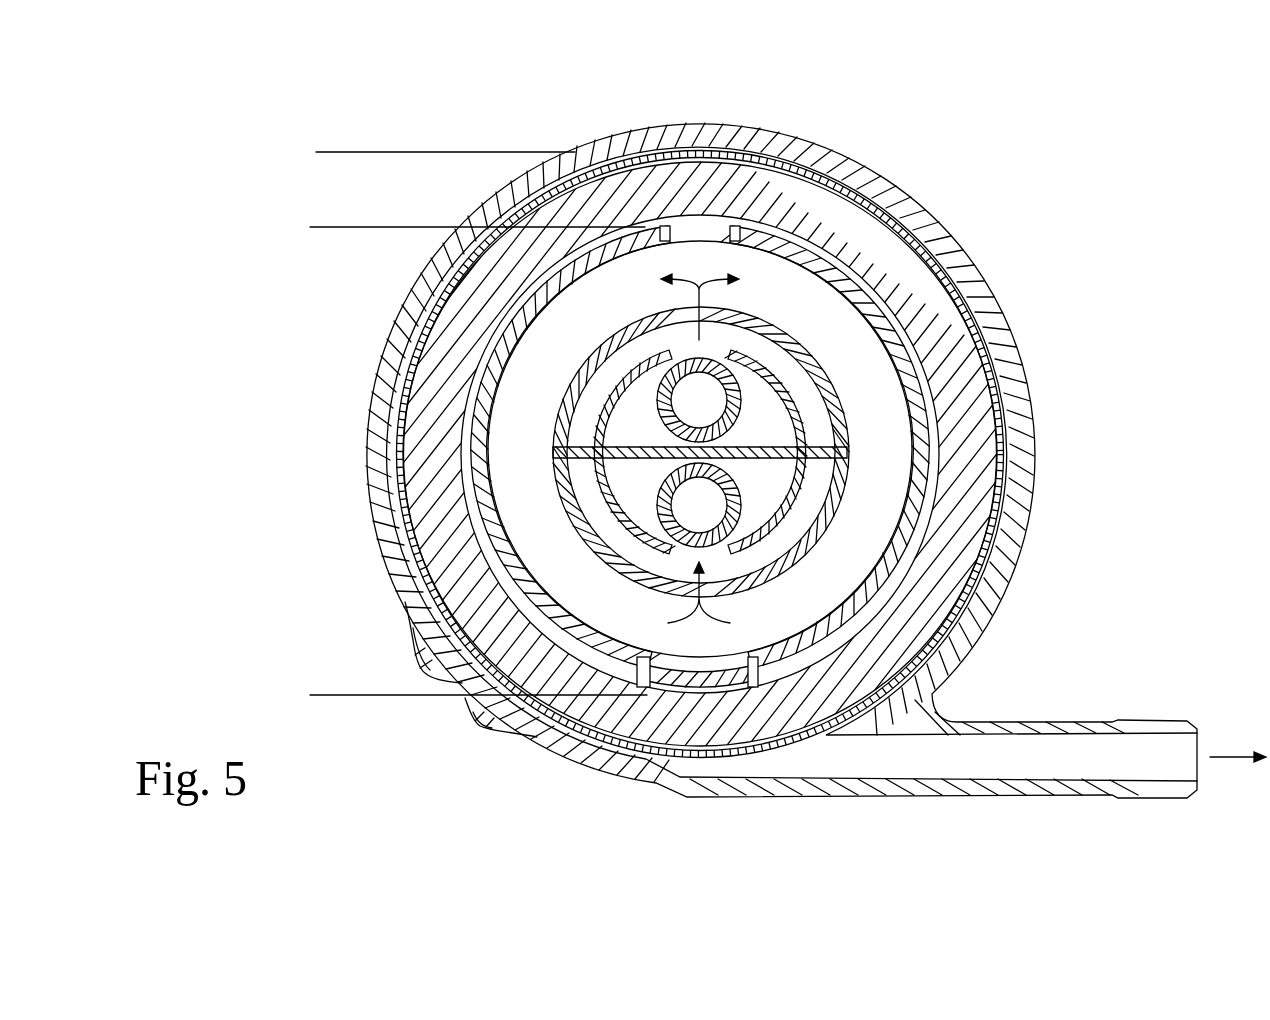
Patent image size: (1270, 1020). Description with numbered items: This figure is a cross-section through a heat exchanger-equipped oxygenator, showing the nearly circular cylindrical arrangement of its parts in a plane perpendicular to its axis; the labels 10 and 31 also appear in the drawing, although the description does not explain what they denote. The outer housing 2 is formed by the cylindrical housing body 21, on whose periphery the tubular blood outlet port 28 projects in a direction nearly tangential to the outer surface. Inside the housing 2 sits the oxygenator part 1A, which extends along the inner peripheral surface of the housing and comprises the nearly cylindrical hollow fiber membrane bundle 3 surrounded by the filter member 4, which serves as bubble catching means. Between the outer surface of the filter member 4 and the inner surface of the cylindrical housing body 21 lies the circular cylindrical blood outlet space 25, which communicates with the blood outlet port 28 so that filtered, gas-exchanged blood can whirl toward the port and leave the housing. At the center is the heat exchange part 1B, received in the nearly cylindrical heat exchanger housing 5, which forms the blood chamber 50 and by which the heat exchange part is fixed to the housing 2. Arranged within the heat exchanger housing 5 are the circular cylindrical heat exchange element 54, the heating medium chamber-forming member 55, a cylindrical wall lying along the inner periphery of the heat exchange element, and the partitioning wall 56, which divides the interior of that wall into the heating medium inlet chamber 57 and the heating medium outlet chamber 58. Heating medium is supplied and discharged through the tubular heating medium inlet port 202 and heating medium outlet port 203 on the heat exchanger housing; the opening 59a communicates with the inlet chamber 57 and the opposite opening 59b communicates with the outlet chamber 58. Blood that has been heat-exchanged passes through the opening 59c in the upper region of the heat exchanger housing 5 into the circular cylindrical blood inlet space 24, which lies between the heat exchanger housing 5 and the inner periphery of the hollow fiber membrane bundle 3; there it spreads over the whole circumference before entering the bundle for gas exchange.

The pump 10 is at (1038, 118).
The housing 2 is at (934, 207).
The cylindrical housing body 21 is at (783, 134).
The blood inlet space 24 is at (828, 213).
The blood outlet port 28 is at (1128, 721).
The blood outlet space 25 is at (1003, 507).
The filter member 4 is at (1000, 460).
The stator inner surface 31 is at (955, 375).
The hollow fiber membrane bundle 3 is at (536, 612).
The heat exchanger housing 5 is at (920, 418).
The heat exchange element 54 is at (868, 270).
The opening 59c is at (700, 232).
The heating medium inlet chamber 57 is at (823, 307).
The heating medium chamber-forming member 55 is at (815, 373).
The heating medium outlet chamber 58 is at (790, 540).
The partitioning wall 56 is at (780, 370).
The heating medium inlet port 202 is at (688, 392).
The heating medium outlet port 203 is at (690, 502).
The opening 59a is at (707, 300).
The opening 59b is at (730, 623).
The blood chamber 50 is at (680, 668).
The oxygenator part 1A is at (318, 152).
The heat exchange part 1B is at (318, 227).